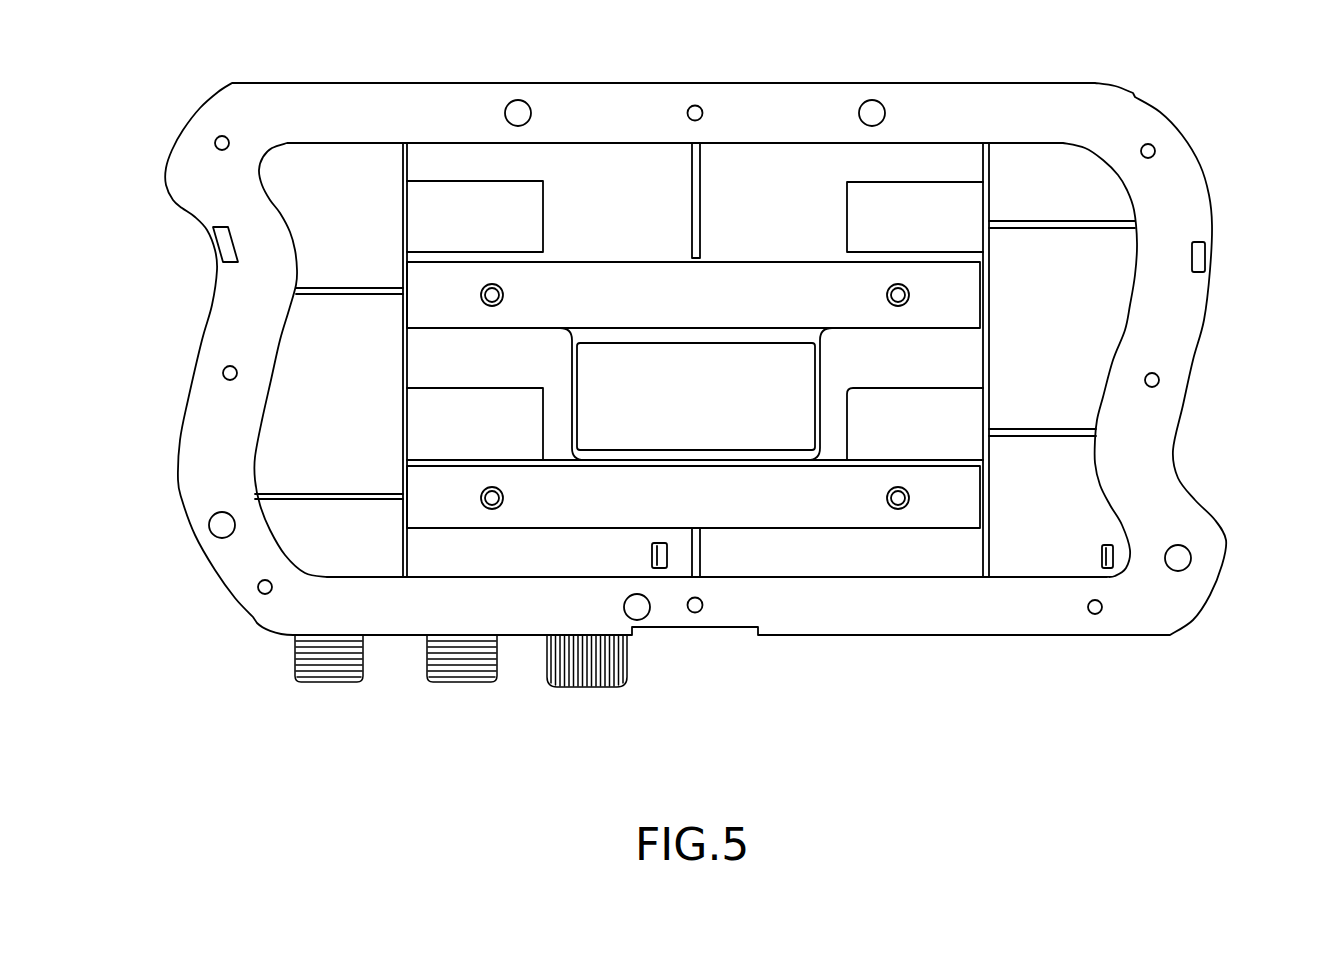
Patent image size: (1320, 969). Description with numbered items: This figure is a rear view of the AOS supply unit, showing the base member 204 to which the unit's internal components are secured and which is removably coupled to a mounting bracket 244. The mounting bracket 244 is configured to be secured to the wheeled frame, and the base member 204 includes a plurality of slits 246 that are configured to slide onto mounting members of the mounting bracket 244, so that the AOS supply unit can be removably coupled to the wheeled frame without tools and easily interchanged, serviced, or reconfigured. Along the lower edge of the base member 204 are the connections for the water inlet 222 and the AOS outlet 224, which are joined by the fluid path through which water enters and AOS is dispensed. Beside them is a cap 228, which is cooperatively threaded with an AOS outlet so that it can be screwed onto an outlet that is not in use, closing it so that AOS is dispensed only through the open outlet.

The base member 204 is at (1047, 83).
The water inlet 222 is at (328, 683).
The AOS outlet 224 is at (462, 683).
The cap 228 is at (590, 688).
The mounting bracket 244 is at (813, 510).
The slits 246 is at (480, 253).